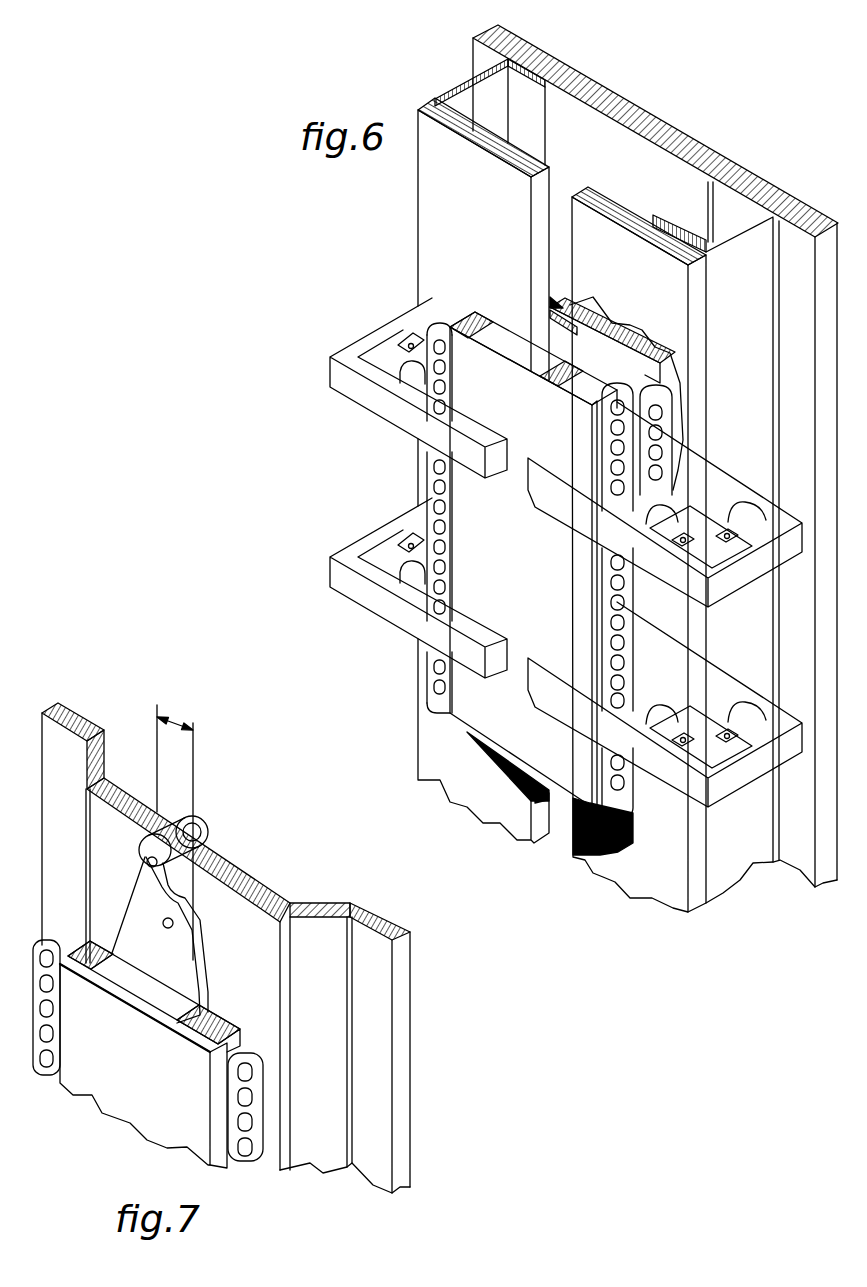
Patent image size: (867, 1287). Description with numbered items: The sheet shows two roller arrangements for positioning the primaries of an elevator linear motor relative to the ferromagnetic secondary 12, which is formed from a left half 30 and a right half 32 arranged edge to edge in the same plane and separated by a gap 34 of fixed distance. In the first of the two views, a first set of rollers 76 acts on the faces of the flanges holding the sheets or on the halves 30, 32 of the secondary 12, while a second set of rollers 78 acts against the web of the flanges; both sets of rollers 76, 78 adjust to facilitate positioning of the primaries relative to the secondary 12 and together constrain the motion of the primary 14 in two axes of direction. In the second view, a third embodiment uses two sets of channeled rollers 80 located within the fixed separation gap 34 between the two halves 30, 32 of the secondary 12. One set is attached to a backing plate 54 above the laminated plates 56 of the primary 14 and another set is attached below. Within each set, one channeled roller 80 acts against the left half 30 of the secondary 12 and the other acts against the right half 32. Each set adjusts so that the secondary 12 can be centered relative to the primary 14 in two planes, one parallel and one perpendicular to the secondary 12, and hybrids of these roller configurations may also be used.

In FIG. 6, the ferromagnetic secondary 12 is at (586, 163).
In FIG. 7, the ferromagnetic secondary 12 is at (264, 798).
In FIG. 7, the primary 14 is at (143, 1061).
In FIG. 6, the left half 30 is at (433, 229).
In FIG. 7, the left half 30 is at (118, 823).
In FIG. 6, the right half 32 is at (665, 293).
In FIG. 7, the right half 32 is at (248, 955).
In FIG. 7, the gap 34 is at (172, 713).
In FIG. 7, the backing plate 54 is at (112, 1087).
In FIG. 7, the laminated plates 56 is at (85, 937).
In FIG. 6, the first set of rollers 76 is at (672, 707).
In FIG. 6, the second set of rollers 78 is at (742, 708).
In FIG. 7, the channeled rollers 80 is at (187, 890).